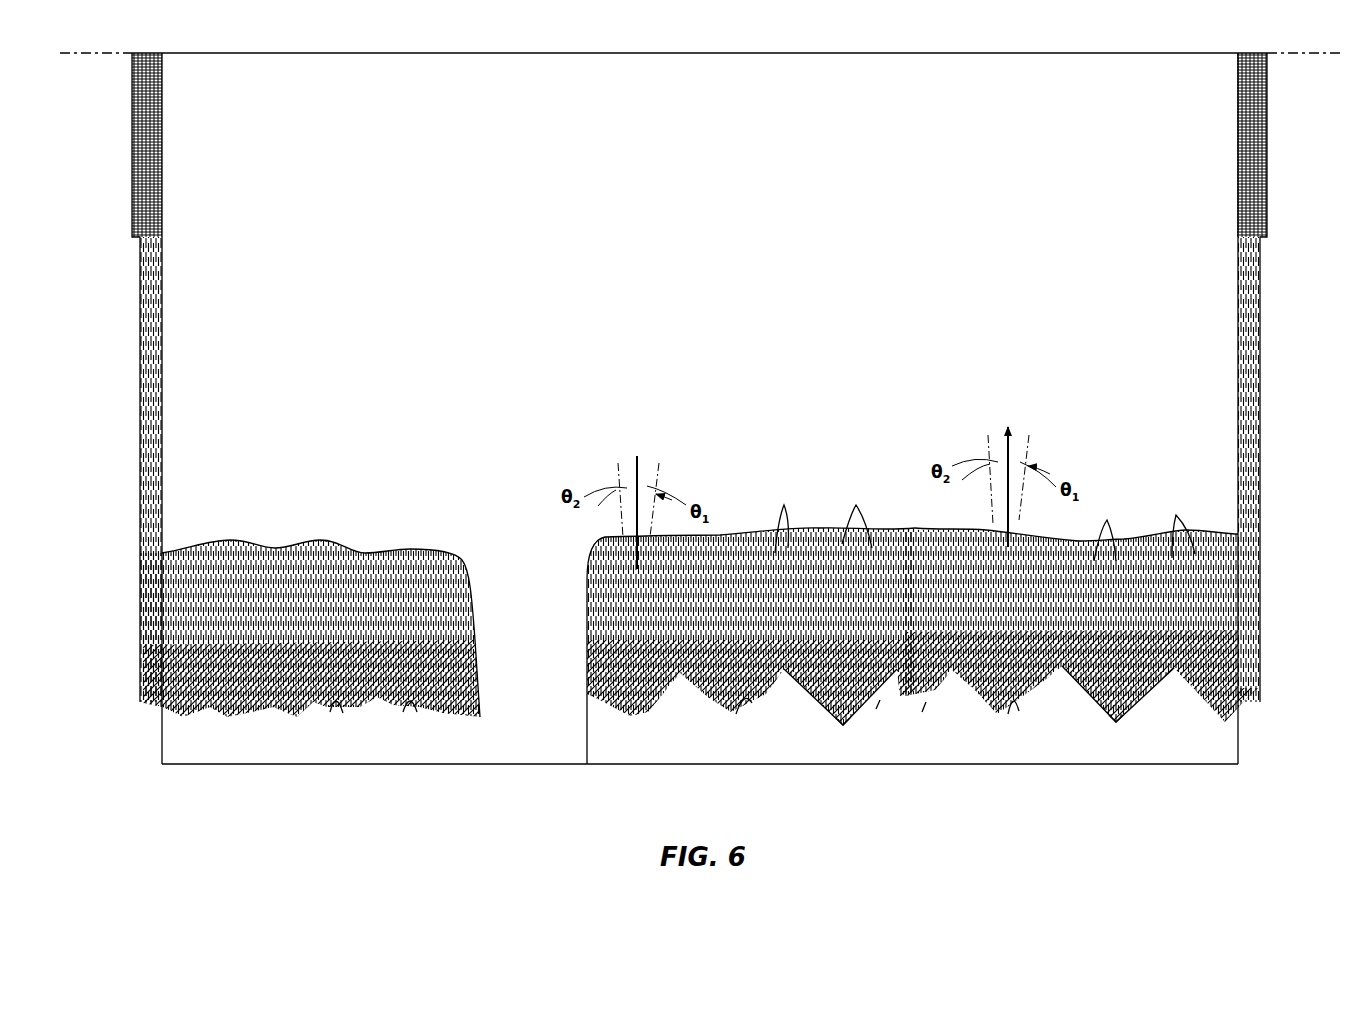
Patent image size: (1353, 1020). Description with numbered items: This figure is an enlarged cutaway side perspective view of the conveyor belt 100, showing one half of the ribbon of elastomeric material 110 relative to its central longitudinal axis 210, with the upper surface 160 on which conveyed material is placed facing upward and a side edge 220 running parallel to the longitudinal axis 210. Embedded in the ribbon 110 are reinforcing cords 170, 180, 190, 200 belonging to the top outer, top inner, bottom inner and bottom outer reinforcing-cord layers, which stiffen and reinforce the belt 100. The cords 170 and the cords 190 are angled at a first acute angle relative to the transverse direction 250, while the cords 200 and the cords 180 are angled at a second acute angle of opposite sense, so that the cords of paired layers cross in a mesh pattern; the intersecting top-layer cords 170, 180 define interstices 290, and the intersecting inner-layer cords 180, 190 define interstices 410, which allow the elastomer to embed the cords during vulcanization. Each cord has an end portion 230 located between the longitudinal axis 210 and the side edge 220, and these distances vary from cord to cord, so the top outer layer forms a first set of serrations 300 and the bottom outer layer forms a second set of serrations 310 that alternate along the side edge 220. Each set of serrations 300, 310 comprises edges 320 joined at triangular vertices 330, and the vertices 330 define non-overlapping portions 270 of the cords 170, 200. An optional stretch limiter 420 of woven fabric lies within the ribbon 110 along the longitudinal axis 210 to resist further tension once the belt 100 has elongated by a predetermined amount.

The belt 100 is at (1276, 380).
The ribbon of elastomeric material 110 is at (737, 87).
The upper surface 160 is at (732, 213).
The reinforcing cords 170 is at (417, 712).
The reinforcing cords 180 is at (872, 548).
The reinforcing cords 190 is at (1116, 561).
The reinforcing cords 200 is at (343, 713).
The central longitudinal axis 210 is at (1293, 52).
The side edge 220 is at (523, 765).
The end portion 230 is at (877, 711).
The transverse direction 250 is at (634, 474).
The non-overlapping portions 270 is at (282, 721).
The interstices 290 is at (788, 548).
The first set of serrations 300 is at (694, 707).
The second set of serrations 310 is at (1153, 711).
The edges 320 is at (808, 694).
The triangular vertices 330 is at (843, 726).
The interstices 410 is at (1195, 554).
The stretch limiter 420 is at (1266, 140).